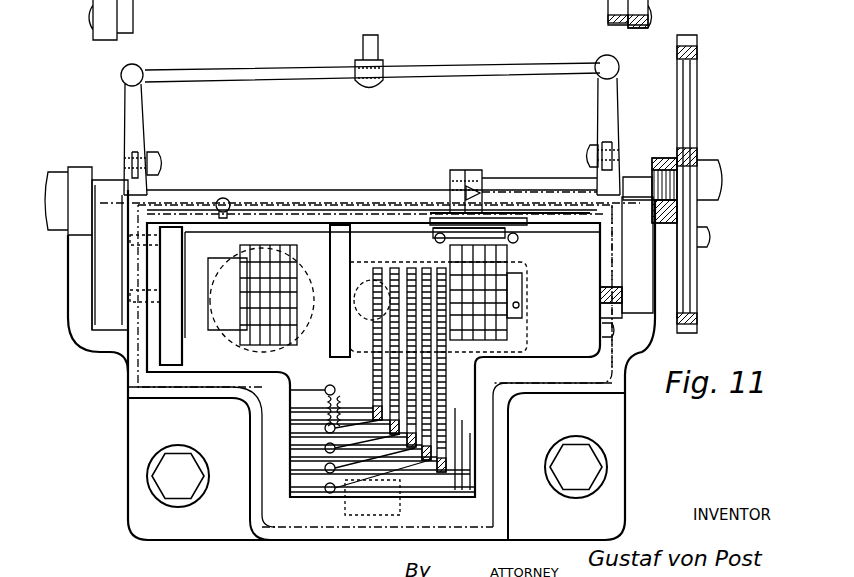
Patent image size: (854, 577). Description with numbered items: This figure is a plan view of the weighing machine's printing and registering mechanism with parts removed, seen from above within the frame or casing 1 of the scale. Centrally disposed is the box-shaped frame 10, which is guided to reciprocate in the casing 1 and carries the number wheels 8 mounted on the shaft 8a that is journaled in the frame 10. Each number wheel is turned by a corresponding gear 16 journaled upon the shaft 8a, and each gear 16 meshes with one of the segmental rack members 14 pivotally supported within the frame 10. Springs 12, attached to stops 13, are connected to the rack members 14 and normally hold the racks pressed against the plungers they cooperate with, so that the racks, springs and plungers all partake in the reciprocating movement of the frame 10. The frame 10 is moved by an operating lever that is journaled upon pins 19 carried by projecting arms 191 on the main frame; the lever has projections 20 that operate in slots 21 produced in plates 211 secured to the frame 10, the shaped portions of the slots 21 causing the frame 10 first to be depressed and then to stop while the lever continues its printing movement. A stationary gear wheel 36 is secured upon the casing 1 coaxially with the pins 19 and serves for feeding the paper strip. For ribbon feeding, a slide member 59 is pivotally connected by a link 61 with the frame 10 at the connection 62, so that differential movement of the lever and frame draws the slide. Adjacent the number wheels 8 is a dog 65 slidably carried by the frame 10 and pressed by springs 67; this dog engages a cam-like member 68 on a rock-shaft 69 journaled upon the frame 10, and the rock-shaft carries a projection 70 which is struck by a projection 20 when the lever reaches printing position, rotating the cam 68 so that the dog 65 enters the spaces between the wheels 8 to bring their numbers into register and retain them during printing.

The frame or casing 1 is at (361, 365).
The number wheels 8 is at (509, 263).
The shaft of the number wheels 8a is at (523, 290).
The box-shaped frame 10 is at (593, 258).
The springs 12 is at (315, 401).
The stops 13 is at (345, 492).
The segmental rack members 14 is at (455, 370).
The gear 16 is at (388, 262).
The pins 19 is at (104, 195).
The projections 20 is at (135, 16).
The slots 21 is at (613, 267).
The stationary gear wheel 36 is at (696, 130).
The slide member 59 is at (384, 47).
The link 61 is at (141, 119).
The pivotal connection 62 is at (165, 163).
The dog 65 is at (477, 190).
The springs 67 is at (527, 240).
The cam-like member 68 is at (470, 170).
The rock-shaft 69 is at (517, 187).
The projection 70 is at (651, 213).
The projecting arms 191 is at (68, 250).
The plates 211 is at (123, 267).